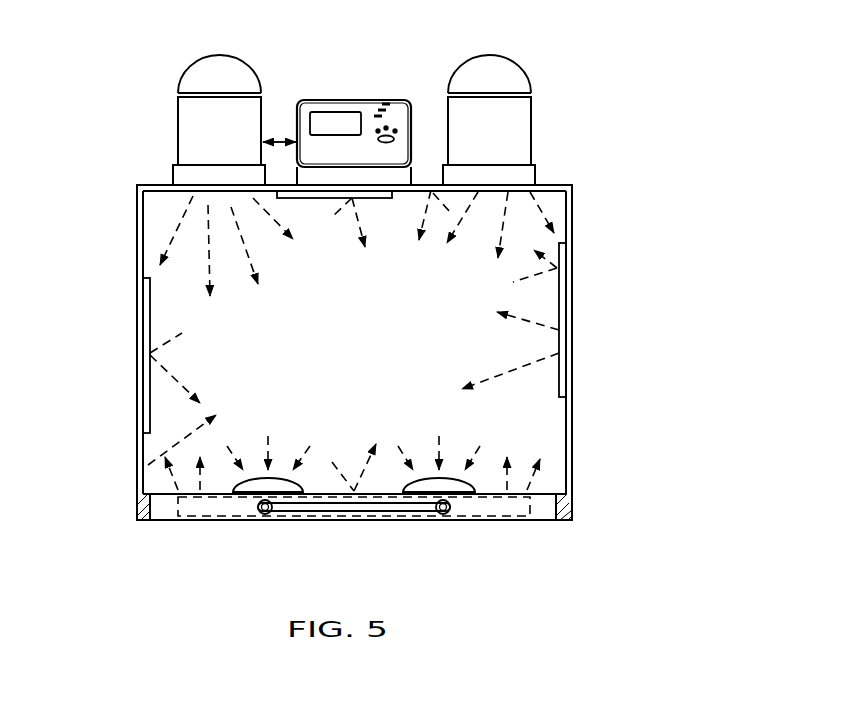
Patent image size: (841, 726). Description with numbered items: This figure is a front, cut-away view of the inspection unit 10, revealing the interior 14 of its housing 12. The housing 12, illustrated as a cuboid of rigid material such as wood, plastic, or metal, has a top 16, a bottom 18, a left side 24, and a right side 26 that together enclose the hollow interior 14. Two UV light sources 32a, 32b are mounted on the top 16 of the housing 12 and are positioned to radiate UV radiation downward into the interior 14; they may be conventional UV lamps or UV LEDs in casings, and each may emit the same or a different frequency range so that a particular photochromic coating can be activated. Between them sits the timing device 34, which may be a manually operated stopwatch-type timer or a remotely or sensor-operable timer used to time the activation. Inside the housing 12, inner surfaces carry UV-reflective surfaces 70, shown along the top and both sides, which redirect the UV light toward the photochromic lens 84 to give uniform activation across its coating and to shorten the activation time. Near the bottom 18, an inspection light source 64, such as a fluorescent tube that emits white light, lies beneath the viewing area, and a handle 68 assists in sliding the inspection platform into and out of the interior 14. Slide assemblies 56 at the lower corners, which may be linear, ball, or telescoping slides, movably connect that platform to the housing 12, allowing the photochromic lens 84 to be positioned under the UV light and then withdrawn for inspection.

The inspection unit 10 is at (625, 62).
The housing 12 is at (576, 298).
The interior 14 is at (368, 354).
The top 16 is at (562, 185).
The bottom 18 is at (548, 520).
The left side 24 is at (137, 458).
The right side 26 is at (573, 418).
The UV light source 32a is at (233, 72).
The UV light source 32b is at (503, 72).
The timing device 34 is at (370, 115).
The slide assembly 56 is at (140, 512).
The inspection light source 64 is at (198, 507).
The handle 68 is at (360, 507).
The UV-reflective surface 70 is at (301, 198).
The photochromic lens 84 is at (282, 485).